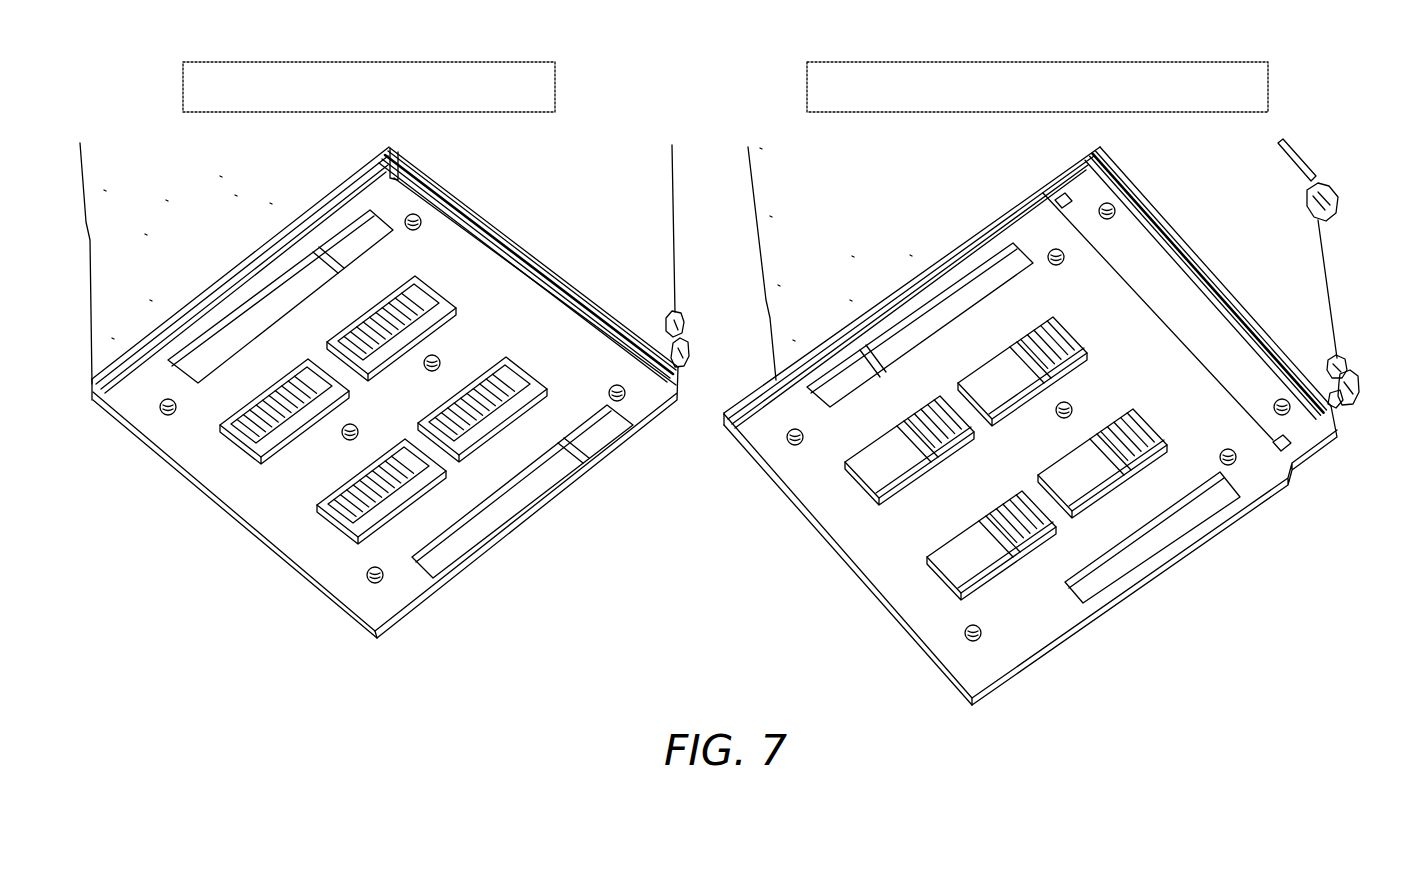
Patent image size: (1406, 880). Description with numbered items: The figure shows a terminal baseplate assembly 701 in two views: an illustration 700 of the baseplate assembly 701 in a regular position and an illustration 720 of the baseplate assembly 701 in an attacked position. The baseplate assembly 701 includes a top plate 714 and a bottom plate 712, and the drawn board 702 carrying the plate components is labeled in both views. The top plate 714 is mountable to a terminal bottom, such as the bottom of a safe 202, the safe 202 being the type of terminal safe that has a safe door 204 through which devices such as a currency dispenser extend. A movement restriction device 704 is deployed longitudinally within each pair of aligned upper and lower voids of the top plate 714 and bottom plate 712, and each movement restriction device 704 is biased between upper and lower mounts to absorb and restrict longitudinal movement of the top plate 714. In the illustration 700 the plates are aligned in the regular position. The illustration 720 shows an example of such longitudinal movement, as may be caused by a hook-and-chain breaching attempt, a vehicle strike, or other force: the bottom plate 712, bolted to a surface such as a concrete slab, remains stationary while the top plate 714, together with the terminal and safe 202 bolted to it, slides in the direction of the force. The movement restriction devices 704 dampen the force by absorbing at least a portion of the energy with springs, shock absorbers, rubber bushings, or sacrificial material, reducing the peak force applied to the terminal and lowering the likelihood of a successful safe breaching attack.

The illustration of the baseplate assembly in a regular position 700 is at (560, 126).
The illustration of the baseplate assembly in an attacked position 720 is at (1258, 126).
The circuit board 702 is at (538, 324).
The movement restriction device 704 is at (380, 448).
The bottom plate 712 is at (376, 196).
The top plate 714 is at (465, 199).
The terminal safe 202 is at (90, 228).
The safe door 204 is at (658, 244).
The terminal baseplate assembly 701 is at (155, 505).